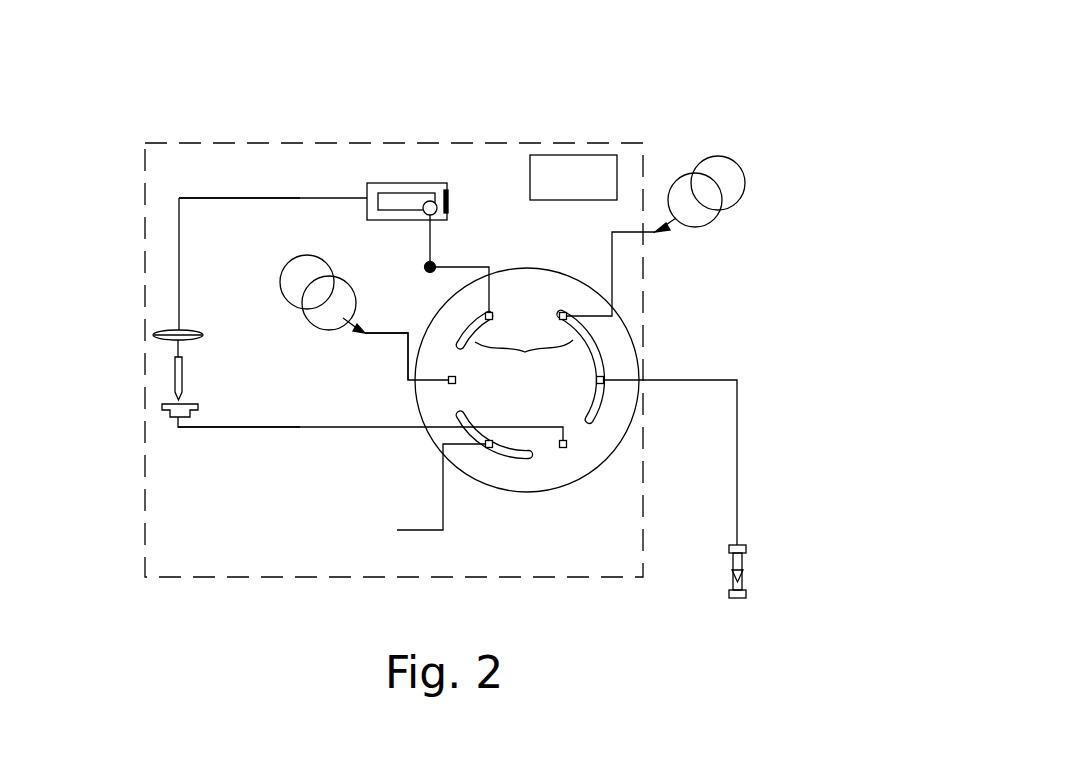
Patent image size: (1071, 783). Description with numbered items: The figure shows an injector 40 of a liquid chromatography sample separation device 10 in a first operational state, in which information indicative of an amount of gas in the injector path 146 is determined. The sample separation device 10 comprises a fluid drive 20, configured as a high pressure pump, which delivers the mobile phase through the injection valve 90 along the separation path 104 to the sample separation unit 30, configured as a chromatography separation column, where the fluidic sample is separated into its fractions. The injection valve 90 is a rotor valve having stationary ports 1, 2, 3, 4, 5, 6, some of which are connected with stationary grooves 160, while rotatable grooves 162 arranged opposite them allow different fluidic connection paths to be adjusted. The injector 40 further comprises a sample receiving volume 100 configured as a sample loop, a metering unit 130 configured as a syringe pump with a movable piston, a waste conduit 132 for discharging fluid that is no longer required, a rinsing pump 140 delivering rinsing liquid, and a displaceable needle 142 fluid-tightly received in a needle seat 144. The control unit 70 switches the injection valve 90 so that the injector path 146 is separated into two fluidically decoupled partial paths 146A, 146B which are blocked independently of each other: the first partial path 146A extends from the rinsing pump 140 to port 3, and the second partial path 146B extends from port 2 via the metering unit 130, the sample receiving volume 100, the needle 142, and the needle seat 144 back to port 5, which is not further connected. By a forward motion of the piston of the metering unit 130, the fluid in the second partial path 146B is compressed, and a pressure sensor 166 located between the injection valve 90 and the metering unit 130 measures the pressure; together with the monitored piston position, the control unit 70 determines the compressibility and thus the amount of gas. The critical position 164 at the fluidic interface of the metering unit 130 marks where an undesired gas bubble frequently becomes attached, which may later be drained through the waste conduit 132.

The sample separation device 10 is at (683, 95).
The fluid drive 20 is at (725, 160).
The sample separation unit 30 is at (742, 560).
The injector 40 is at (143, 143).
The control unit 70 is at (573, 177).
The injection valve 90 is at (590, 287).
The sample receiving volume 100 is at (153, 333).
The separation path 104 is at (652, 236).
The metering unit 130 is at (377, 185).
The waste conduit 132 is at (443, 480).
The rinsing pump 140 is at (305, 256).
The needle 142 is at (175, 380).
The needle seat 144 is at (173, 417).
The injector path 146 is at (265, 200).
The first partial path 146A is at (407, 358).
The second partial path 146B is at (208, 197).
The stationary grooves 160 is at (524, 362).
The rotatable grooves 162 is at (600, 357).
The critical position 164 is at (427, 201).
The pressure sensor 166 is at (434, 262).
The port 1 is at (576, 304).
The port 2 is at (478, 304).
The port 3 is at (441, 367).
The port 4 is at (480, 460).
The port 5 is at (573, 460).
The port 6 is at (612, 393).